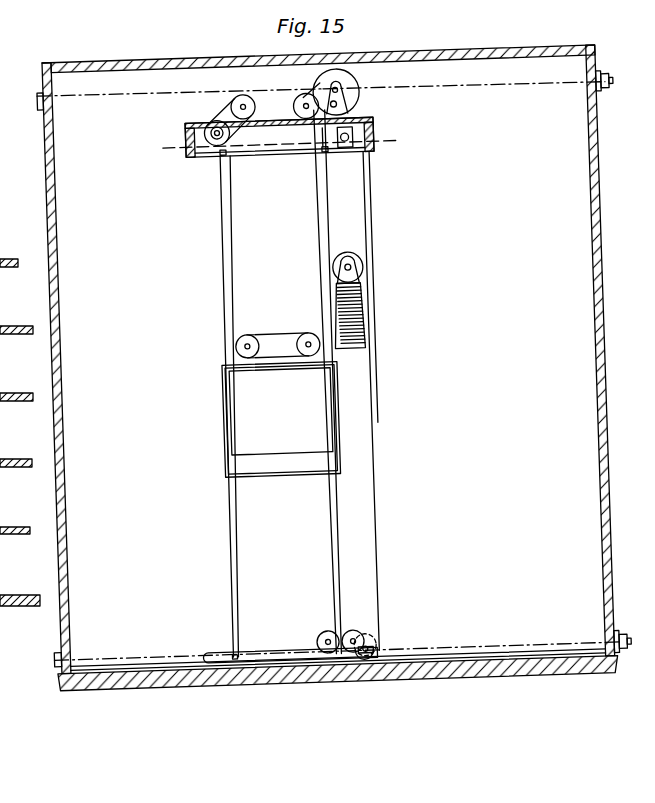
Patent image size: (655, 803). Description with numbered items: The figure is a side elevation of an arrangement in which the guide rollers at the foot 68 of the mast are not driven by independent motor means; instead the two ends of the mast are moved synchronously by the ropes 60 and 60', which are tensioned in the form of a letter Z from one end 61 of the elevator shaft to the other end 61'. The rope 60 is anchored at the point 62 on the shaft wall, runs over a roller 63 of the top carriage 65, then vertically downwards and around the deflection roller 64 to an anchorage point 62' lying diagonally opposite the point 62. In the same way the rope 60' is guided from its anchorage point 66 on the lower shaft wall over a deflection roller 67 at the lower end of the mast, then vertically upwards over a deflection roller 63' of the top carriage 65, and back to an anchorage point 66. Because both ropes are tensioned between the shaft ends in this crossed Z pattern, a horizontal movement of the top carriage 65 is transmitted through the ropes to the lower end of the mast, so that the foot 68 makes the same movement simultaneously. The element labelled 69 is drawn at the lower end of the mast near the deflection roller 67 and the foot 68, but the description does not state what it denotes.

The rope 60 is at (330, 369).
The rope 60' is at (329, 370).
The end of the elevator shaft 61 is at (69, 368).
The other end of the elevator shaft 61' is at (620, 350).
The anchorage point 62 is at (25, 96).
The anchorage point 62' is at (632, 628).
The roller of the top carriage 63 is at (303, 93).
The deflection roller of the top carriage 63' is at (352, 91).
The deflection roller 64 is at (355, 626).
The top carriage 65 is at (280, 124).
The anchorage point 66 is at (329, 375).
The deflection roller 67 is at (314, 636).
The foot of the mast 68 is at (386, 401).
The guide roller 69 is at (383, 641).